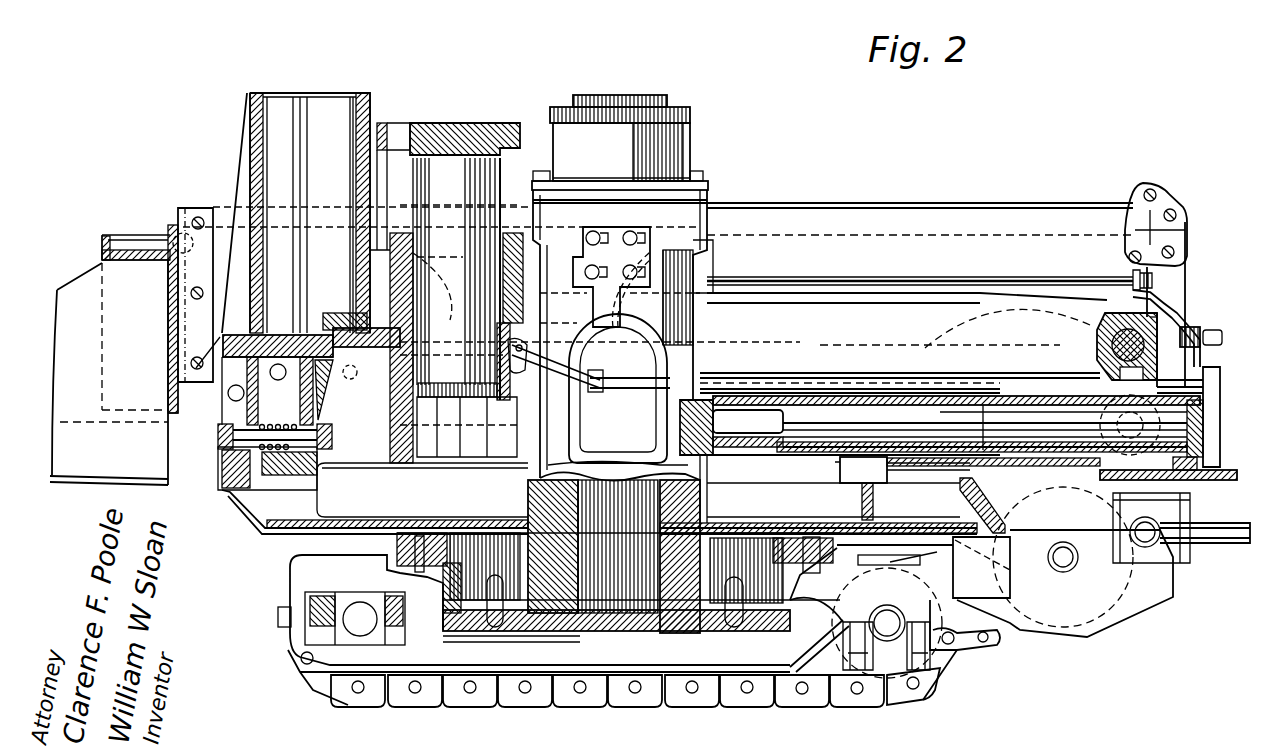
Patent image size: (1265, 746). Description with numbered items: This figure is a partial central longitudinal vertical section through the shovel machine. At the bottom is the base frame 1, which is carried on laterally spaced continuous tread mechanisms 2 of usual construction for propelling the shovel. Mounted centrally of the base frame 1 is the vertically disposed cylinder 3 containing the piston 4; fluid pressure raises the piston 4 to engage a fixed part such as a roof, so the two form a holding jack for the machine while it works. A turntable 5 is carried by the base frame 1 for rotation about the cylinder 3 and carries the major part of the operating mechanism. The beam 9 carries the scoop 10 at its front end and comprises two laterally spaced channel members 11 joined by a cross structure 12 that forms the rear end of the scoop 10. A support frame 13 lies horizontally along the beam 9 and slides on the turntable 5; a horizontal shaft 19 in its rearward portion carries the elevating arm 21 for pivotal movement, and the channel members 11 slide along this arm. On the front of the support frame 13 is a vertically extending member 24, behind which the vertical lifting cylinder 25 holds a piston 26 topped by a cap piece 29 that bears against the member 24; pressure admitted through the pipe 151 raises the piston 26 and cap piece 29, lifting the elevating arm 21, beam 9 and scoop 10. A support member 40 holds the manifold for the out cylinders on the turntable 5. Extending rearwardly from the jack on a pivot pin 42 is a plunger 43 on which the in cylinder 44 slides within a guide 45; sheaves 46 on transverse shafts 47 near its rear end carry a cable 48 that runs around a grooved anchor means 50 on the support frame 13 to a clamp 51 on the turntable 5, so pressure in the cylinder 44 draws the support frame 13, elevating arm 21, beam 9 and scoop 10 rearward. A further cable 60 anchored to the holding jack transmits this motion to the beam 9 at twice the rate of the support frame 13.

The base frame 1 is at (288, 577).
The continuous tread mechanisms 2 is at (935, 680).
The vertically disposed cylinder 3 is at (690, 150).
The piston 4 is at (680, 100).
The turntable 5 is at (352, 529).
The beam 9 is at (1196, 287).
The scoop 10 is at (107, 480).
The channel members 11 is at (1186, 270).
The cross structure 12 is at (178, 412).
The support frame 13 is at (985, 302).
The horizontal shaft 19 is at (1163, 337).
The elevating arm 21 is at (985, 205).
The vertically extending member 24 is at (300, 94).
The vertical lifting cylinder 25 is at (396, 388).
The piston 26 is at (497, 237).
The cap piece 29 is at (455, 125).
The support member 40 is at (1220, 421).
The pivot pin 42 is at (720, 455).
The plunger 43 is at (773, 455).
The cylinder 44 is at (1203, 393).
The guide 45 is at (1212, 458).
The sheaves 46 is at (1200, 370).
The shafts 47 is at (1190, 478).
The cable 48 is at (1097, 360).
The grooved anchor means 50 is at (1097, 357).
The clamp 51 is at (873, 498).
The cable 60 is at (720, 246).
The pipe 151 is at (645, 385).